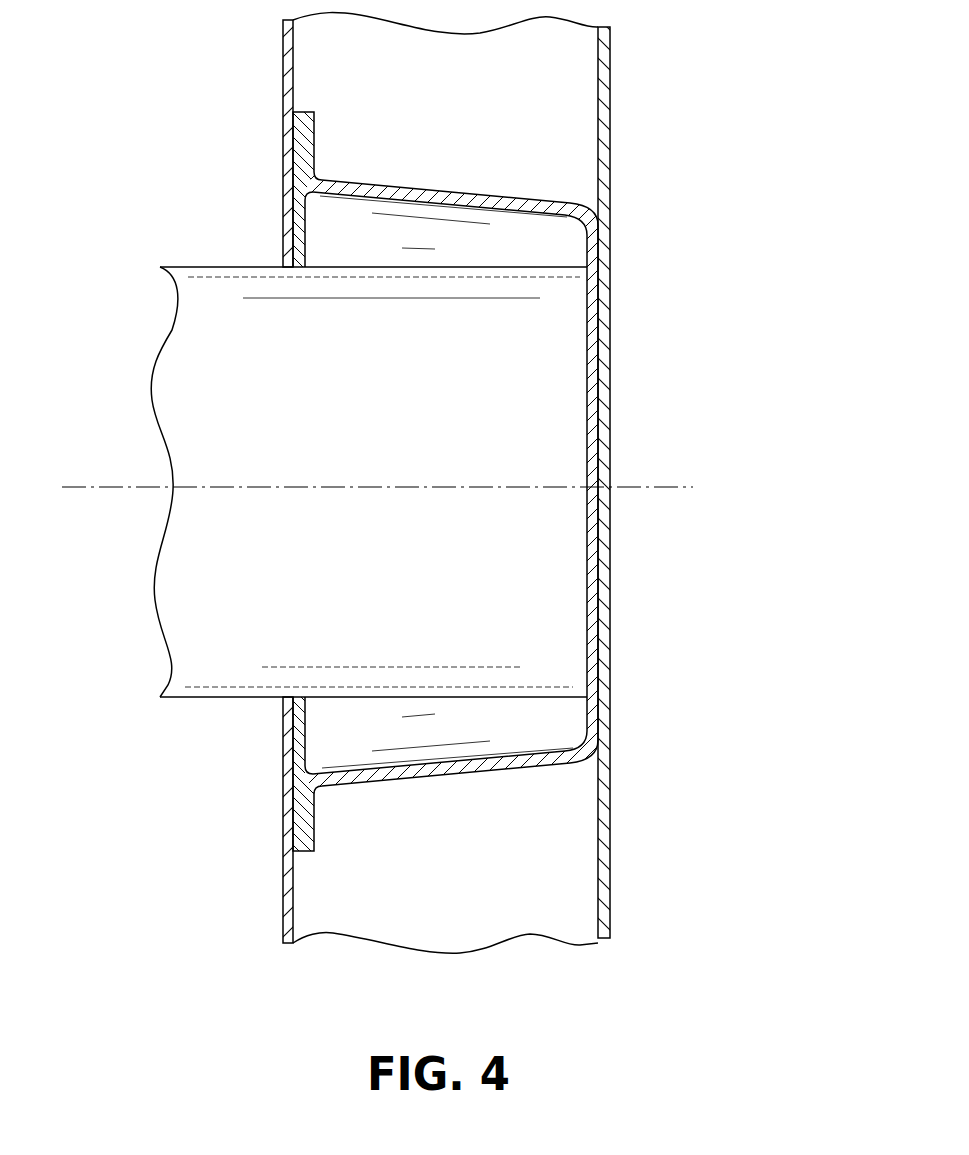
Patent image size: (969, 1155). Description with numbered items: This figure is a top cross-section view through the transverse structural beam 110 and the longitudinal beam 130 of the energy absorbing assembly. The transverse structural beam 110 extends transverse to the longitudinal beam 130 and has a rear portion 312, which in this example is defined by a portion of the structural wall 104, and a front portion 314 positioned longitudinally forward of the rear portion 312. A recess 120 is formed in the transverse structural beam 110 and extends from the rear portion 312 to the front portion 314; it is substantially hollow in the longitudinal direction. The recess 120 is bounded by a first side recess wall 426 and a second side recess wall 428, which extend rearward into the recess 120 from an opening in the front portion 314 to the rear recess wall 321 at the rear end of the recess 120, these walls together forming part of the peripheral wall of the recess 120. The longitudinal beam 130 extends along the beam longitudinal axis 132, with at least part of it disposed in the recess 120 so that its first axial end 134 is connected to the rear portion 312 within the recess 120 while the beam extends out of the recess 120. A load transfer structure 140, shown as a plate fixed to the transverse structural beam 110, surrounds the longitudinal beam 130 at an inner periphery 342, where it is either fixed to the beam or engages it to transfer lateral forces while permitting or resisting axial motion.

The structural wall 104 is at (610, 105).
The transverse structural beam 110 is at (283, 48).
The recess 120 is at (364, 241).
The longitudinal beam 130 is at (183, 267).
The beam longitudinal axis 132 is at (118, 486).
The first axial end 134 is at (588, 392).
The load transfer structure 140 is at (290, 728).
The rear portion 312 is at (604, 345).
The front portion 314 is at (283, 124).
The rear recess wall 321 is at (592, 452).
The inner periphery 342 is at (305, 708).
The first side recess wall 426 is at (398, 777).
The second side recess wall 428 is at (397, 188).